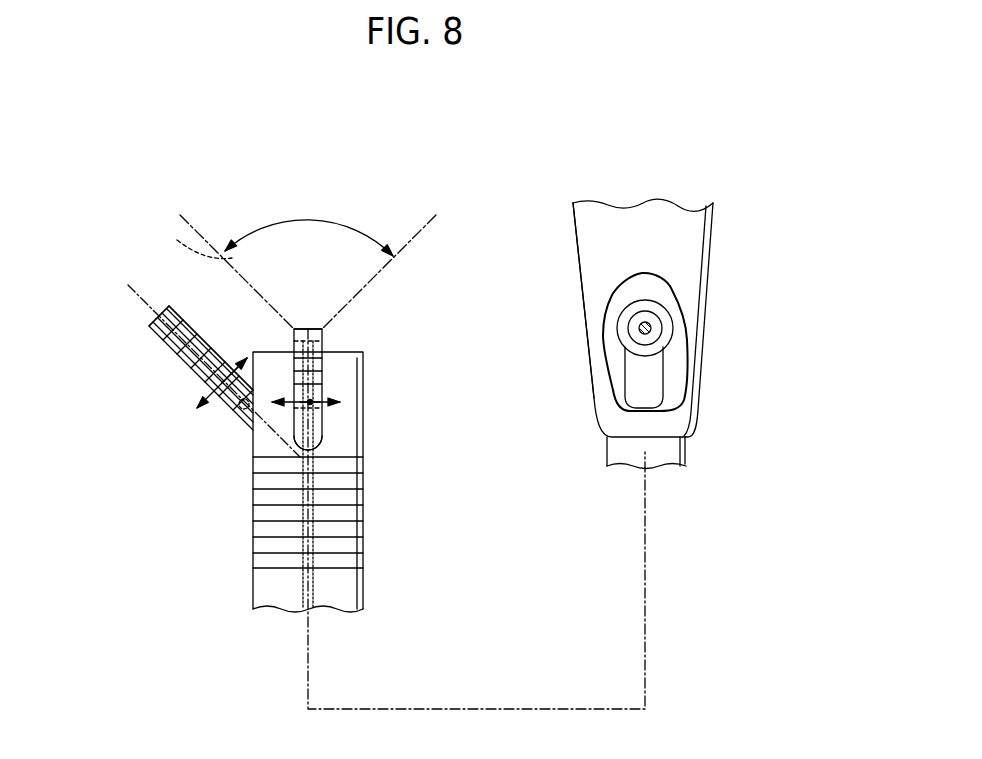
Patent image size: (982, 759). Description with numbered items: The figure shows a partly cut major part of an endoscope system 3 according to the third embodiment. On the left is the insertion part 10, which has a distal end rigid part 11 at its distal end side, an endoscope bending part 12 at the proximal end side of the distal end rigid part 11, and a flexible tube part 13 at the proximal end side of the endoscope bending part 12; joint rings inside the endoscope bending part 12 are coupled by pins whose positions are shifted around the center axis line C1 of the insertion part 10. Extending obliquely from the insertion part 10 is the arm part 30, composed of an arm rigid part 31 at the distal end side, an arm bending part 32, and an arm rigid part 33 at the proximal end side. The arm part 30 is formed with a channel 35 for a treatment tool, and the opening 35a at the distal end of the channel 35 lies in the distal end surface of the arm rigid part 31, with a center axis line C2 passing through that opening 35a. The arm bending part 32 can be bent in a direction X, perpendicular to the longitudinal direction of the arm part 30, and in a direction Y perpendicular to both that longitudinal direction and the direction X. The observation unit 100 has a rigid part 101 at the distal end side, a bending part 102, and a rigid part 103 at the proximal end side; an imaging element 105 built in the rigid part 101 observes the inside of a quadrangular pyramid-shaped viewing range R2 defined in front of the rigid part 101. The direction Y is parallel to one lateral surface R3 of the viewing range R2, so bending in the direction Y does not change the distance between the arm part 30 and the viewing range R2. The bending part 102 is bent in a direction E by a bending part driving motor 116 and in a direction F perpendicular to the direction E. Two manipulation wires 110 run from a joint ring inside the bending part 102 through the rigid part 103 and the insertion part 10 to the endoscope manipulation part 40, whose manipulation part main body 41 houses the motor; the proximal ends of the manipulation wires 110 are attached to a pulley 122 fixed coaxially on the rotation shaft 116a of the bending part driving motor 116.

The endoscope system 3 is at (142, 200).
The insertion part 10 is at (428, 472).
The distal end rigid part 11 is at (363, 458).
The endoscope bending part 12 is at (364, 522).
The flexible tube part 13 is at (364, 590).
The arm part 30 is at (86, 370).
The arm rigid part 31 is at (158, 334).
The arm bending part 32 is at (183, 357).
The arm rigid part 33 is at (228, 405).
The channel 35 is at (244, 406).
The opening 35a is at (158, 305).
The endoscope manipulation part 40 is at (565, 207).
The manipulation part main body 41 is at (580, 250).
The observation unit 100 is at (440, 340).
The rigid part 101 is at (314, 346).
The bending part 102 is at (322, 378).
The rigid part 103 is at (320, 425).
The imaging element 105 is at (324, 329).
The manipulation wires 110 is at (298, 448).
The bending part driving motor 116 is at (658, 300).
The rotation shaft 116a is at (652, 330).
The pulley 122 is at (658, 317).
The center axis line C1 is at (493, 707).
The center axis line C2 is at (130, 300).
The viewing range R2 is at (308, 260).
The lateral surface R3 is at (189, 241).
The direction X is at (198, 404).
The direction Y is at (225, 380).
The direction E is at (292, 406).
The direction F is at (310, 400).